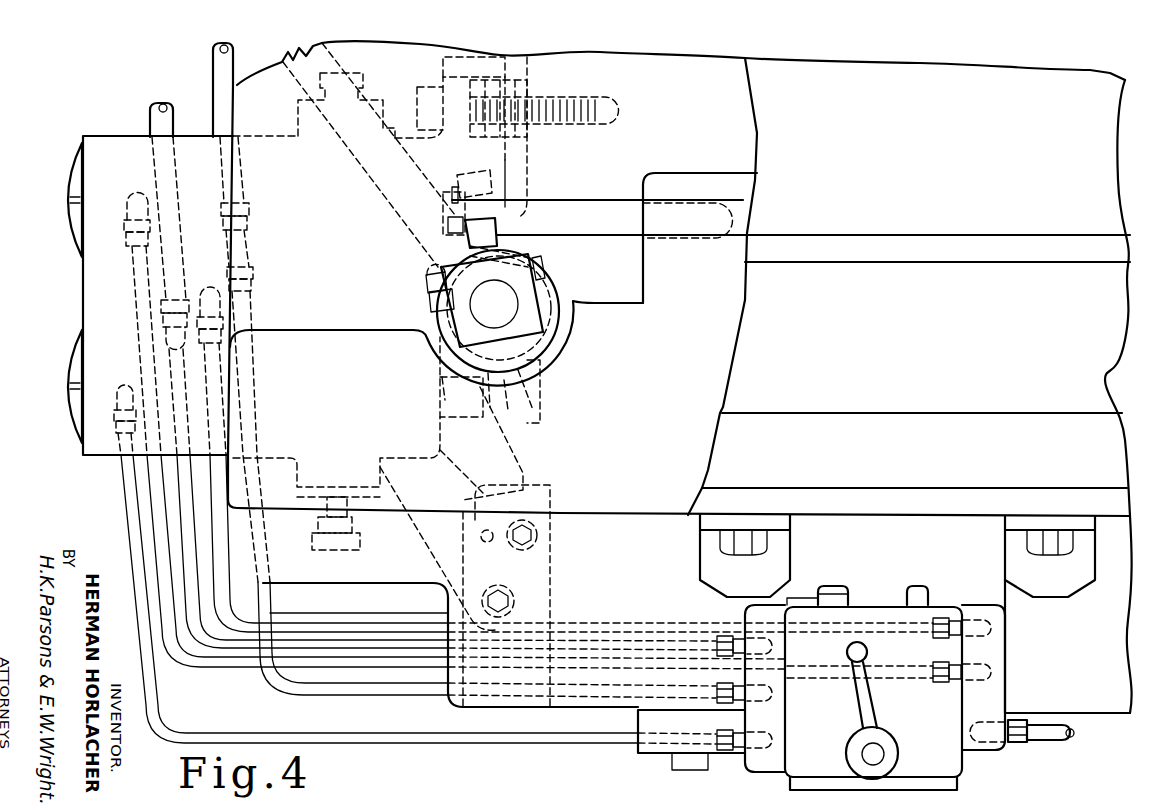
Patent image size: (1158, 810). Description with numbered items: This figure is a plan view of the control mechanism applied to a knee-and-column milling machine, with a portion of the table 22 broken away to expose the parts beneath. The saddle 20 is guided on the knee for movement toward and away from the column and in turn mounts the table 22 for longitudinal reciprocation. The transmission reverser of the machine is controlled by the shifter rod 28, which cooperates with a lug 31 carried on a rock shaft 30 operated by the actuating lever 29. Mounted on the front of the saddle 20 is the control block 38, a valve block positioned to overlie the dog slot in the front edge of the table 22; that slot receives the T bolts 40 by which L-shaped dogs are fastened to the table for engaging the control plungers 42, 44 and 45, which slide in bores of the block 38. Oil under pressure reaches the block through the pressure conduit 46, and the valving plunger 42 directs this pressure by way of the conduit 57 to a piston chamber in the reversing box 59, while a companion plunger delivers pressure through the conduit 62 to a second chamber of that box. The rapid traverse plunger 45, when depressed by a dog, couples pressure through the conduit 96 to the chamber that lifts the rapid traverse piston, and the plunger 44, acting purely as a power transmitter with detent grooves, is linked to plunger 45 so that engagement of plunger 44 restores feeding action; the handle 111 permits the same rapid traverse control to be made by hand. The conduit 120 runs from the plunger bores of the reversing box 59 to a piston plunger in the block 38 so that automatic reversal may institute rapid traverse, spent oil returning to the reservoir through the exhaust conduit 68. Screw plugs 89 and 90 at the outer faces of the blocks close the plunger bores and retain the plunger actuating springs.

The saddle 20 is at (556, 704).
The table 22 is at (1102, 371).
The shifter rod 28 is at (602, 183).
The actuating lever 29 is at (300, 52).
The rock shaft 30 is at (487, 294).
The lug 31 is at (487, 237).
The control block 38 is at (950, 763).
The T bolt 40 is at (740, 558).
The control plunger 42 is at (850, 570).
The control plunger 44 is at (822, 600).
The control plunger 45 is at (938, 600).
The pressure conduit 46 is at (213, 70).
The conduit 57 is at (128, 498).
The reversing box 59 is at (88, 310).
The conduit 62 is at (220, 676).
The exhaust conduit 68 is at (152, 124).
The screw plug 89 is at (70, 425).
The screw plug 90 is at (70, 183).
The conduit 96 is at (1040, 742).
The handle 111 is at (868, 650).
The conduit 120 is at (372, 612).